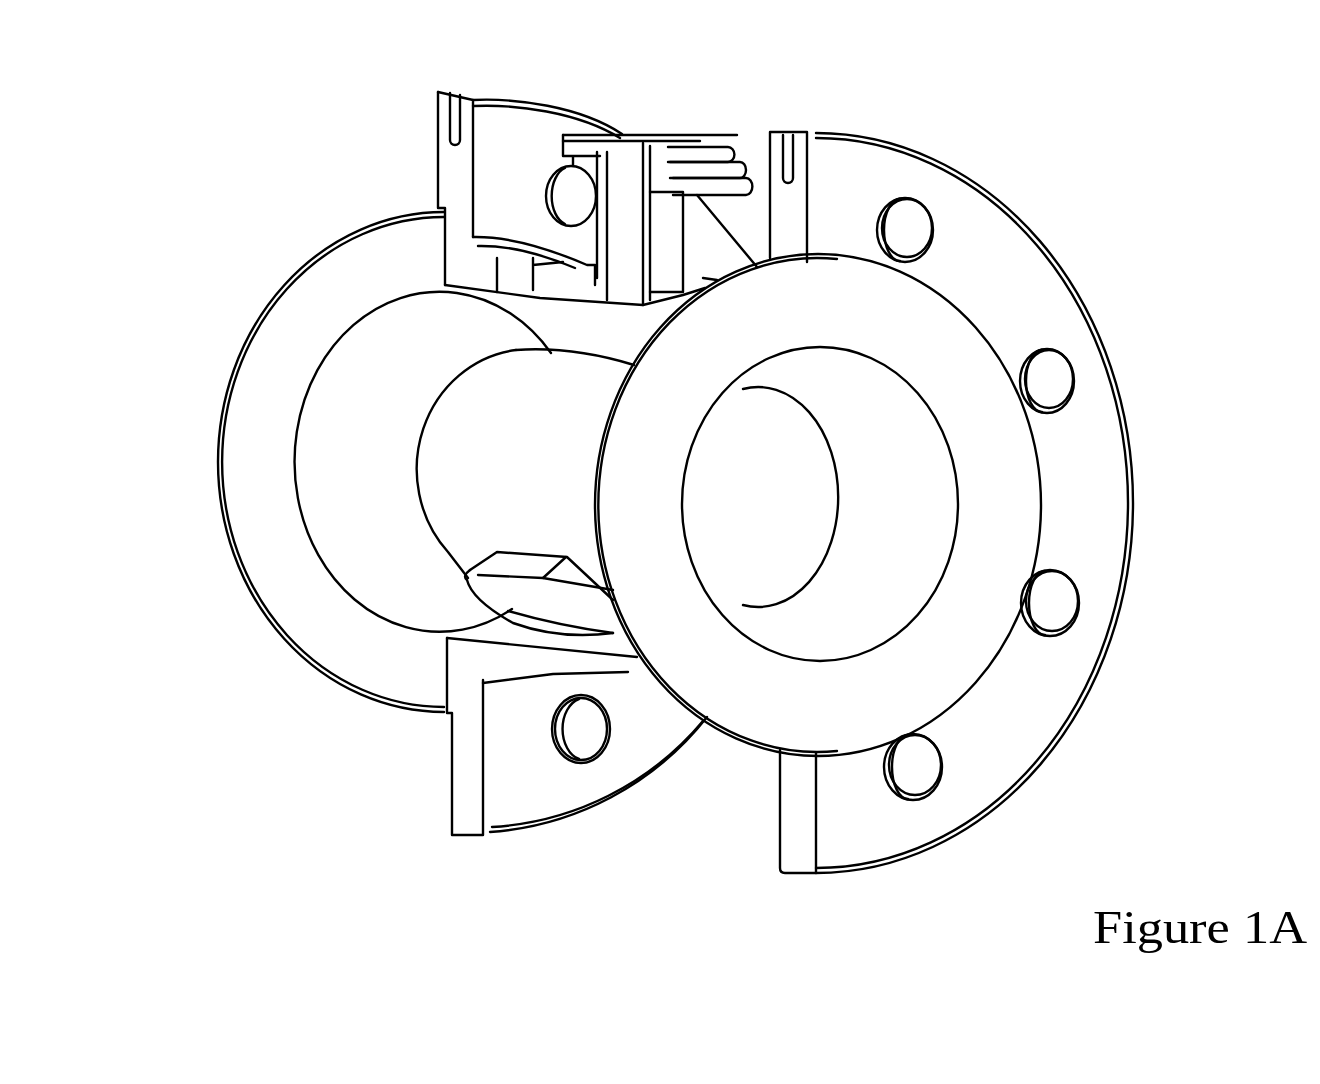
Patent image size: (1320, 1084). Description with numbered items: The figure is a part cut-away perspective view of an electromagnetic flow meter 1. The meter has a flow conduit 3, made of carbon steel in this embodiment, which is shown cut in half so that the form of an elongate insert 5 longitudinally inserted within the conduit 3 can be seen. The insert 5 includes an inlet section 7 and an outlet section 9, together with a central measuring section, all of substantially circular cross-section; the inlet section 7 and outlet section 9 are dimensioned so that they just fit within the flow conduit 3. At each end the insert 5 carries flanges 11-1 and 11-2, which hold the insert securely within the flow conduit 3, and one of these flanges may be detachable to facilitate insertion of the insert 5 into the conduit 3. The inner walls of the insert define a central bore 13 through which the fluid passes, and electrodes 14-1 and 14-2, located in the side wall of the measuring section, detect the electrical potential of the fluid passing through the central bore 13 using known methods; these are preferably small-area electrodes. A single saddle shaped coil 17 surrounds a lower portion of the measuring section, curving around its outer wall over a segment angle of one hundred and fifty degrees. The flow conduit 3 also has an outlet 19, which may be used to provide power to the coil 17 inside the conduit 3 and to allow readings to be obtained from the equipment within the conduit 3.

The electromagnetic flow meter 1 is at (215, 683).
The flow conduit 3 is at (631, 670).
The elongate insert 5 is at (337, 433).
The inlet section 7 is at (201, 405).
The outlet section 9 is at (873, 573).
The flange 11-1 is at (313, 279).
The flange 11-2 is at (1022, 483).
The central bore 13 is at (813, 521).
The electrode 14-1 is at (535, 412).
The electrode 14-2 is at (726, 450).
The saddle shaped coil 17 is at (527, 565).
The outlet 19 is at (733, 148).